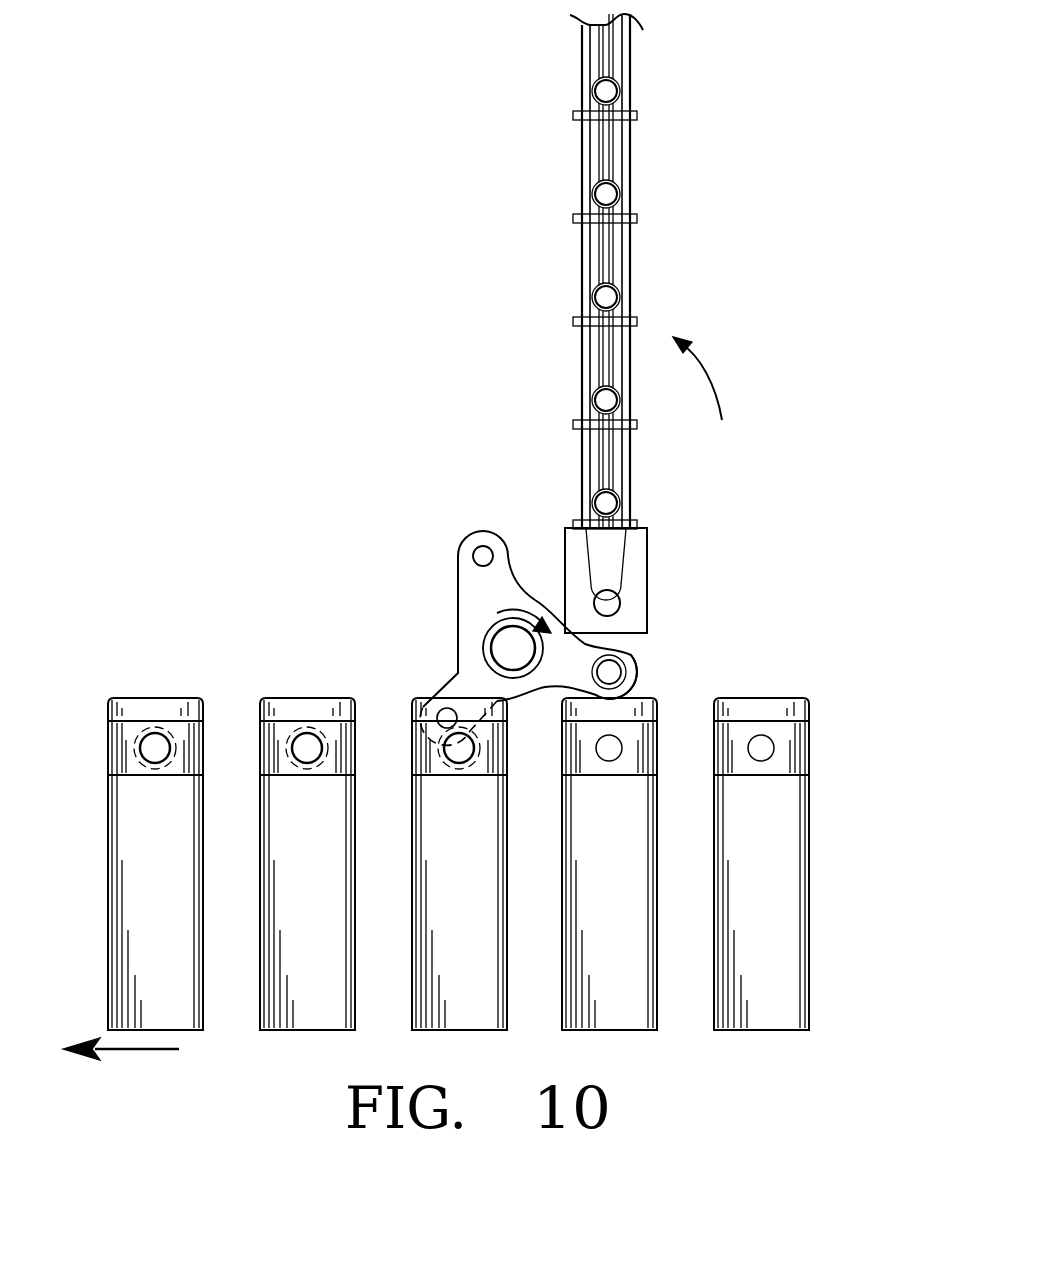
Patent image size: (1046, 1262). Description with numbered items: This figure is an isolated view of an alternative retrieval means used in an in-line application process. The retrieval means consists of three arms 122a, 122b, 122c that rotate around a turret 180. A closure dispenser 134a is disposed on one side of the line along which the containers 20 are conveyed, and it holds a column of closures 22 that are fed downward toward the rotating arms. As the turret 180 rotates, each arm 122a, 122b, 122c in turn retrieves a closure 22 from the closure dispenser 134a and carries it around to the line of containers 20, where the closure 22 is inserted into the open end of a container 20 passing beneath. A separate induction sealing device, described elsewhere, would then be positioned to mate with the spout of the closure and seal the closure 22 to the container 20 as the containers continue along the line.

The container 20 is at (458, 864).
The closure 22 is at (600, 400).
The first arm 122a is at (497, 530).
The second arm 122b is at (645, 688).
The third arm 122c is at (467, 681).
The closure dispenser 134a is at (678, 323).
The turret 180 is at (505, 643).